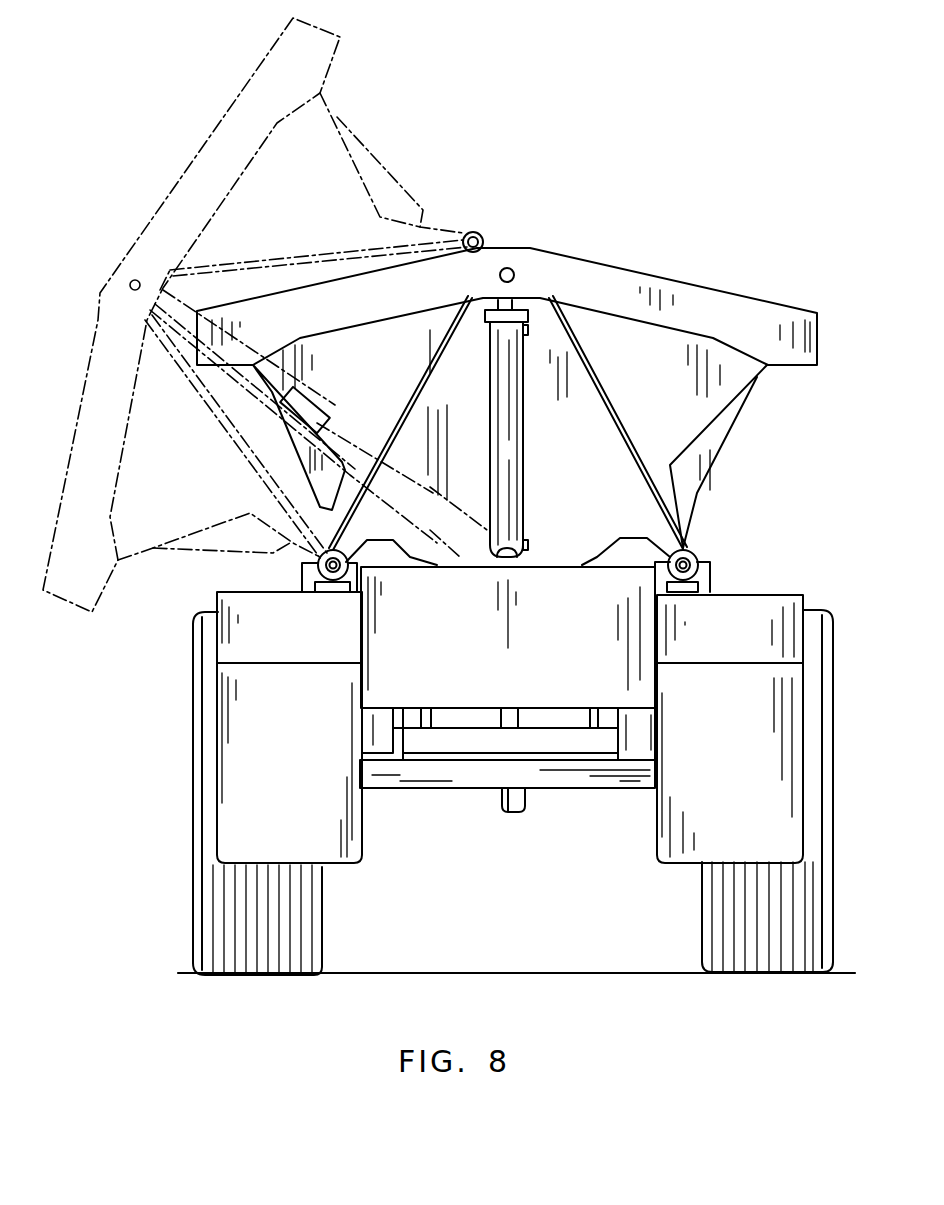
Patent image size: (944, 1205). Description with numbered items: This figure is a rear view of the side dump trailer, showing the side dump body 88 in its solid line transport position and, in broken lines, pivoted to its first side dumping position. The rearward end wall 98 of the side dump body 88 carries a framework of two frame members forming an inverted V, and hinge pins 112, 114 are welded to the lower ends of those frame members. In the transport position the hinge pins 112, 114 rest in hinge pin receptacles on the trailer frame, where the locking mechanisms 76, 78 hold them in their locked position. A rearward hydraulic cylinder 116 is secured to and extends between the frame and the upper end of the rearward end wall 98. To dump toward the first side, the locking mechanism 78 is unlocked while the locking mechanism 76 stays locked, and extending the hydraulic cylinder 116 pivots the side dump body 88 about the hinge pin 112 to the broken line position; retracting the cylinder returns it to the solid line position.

The side dump body 88 is at (627, 257).
The rearward end wall 98 is at (585, 456).
The rearward hydraulic cylinder 116 is at (512, 472).
The hinge pin 112 is at (320, 563).
The hinge pin 114 is at (692, 557).
The locking mechanism 76 is at (337, 573).
The locking mechanism 78 is at (698, 557).